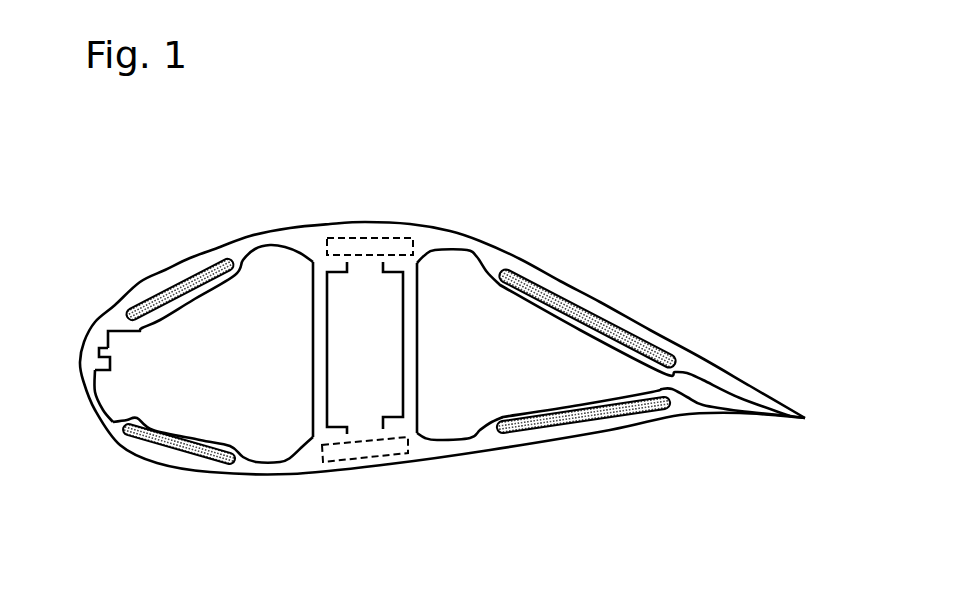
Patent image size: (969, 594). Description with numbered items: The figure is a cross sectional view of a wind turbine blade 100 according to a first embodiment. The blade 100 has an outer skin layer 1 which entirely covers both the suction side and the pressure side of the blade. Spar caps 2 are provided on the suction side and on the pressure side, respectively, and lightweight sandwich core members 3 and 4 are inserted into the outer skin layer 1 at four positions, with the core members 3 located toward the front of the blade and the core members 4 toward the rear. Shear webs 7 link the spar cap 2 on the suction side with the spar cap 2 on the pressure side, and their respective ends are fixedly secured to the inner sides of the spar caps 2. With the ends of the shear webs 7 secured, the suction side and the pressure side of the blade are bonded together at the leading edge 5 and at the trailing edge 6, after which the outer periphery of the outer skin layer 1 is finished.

The blade 100 is at (313, 216).
The outer skin layer 1 is at (518, 263).
The spar cap 2 is at (383, 238).
The lightweight sandwich core member 3 is at (213, 268).
The lightweight sandwich core member 4 is at (568, 302).
The leading edge 5 is at (86, 360).
The trailing edge 6 is at (803, 414).
The shear web 7 is at (318, 353).